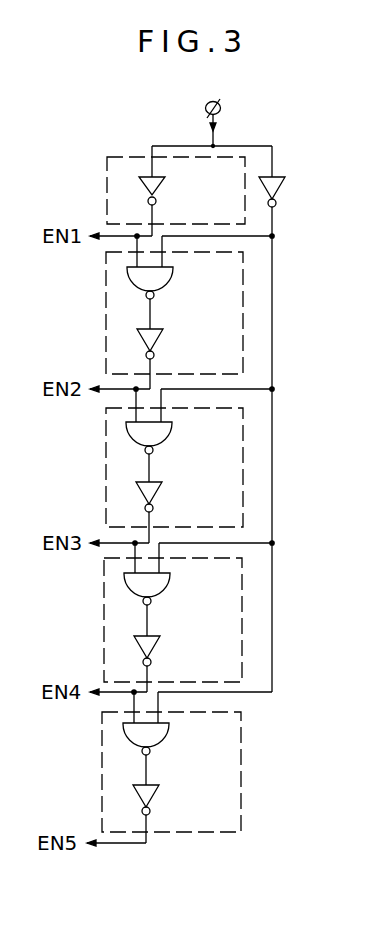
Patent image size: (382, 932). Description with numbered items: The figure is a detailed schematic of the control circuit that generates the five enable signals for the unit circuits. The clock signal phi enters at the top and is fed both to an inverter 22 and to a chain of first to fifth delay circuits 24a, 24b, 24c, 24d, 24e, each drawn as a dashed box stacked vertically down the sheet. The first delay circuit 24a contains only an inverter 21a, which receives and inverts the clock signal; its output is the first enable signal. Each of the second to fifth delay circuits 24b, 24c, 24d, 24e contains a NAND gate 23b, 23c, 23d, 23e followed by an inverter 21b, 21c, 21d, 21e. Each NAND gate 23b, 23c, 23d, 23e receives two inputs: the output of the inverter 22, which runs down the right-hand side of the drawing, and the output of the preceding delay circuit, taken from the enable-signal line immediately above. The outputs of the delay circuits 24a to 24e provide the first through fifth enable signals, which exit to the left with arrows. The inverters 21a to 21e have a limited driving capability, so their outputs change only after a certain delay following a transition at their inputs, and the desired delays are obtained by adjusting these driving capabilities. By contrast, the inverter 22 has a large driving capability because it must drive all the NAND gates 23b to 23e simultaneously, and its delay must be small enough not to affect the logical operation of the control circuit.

The inverter 21a is at (159, 186).
The inverter 21b is at (158, 340).
The inverter 21c is at (157, 494).
The inverter 21d is at (155, 647).
The inverter 21e is at (154, 796).
The inverter 22 is at (280, 186).
The NAND gate 23b is at (166, 284).
The NAND gate 23c is at (165, 439).
The NAND gate 23d is at (163, 590).
The NAND gate 23e is at (162, 740).
The first delay circuit 24a is at (138, 196).
The second delay circuit 24b is at (138, 320).
The third delay circuit 24c is at (137, 475).
The fourth delay circuit 24d is at (136, 625).
The fifth delay circuit 24e is at (135, 777).